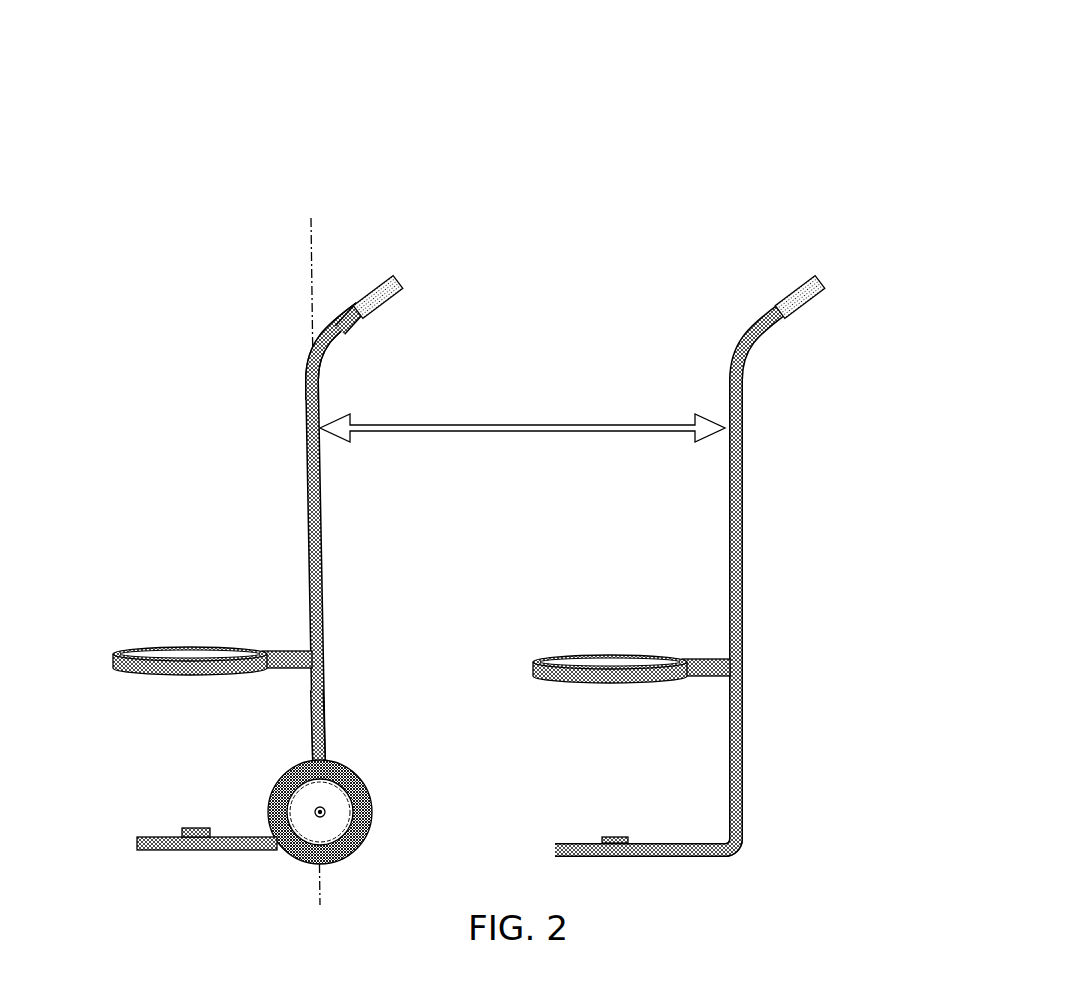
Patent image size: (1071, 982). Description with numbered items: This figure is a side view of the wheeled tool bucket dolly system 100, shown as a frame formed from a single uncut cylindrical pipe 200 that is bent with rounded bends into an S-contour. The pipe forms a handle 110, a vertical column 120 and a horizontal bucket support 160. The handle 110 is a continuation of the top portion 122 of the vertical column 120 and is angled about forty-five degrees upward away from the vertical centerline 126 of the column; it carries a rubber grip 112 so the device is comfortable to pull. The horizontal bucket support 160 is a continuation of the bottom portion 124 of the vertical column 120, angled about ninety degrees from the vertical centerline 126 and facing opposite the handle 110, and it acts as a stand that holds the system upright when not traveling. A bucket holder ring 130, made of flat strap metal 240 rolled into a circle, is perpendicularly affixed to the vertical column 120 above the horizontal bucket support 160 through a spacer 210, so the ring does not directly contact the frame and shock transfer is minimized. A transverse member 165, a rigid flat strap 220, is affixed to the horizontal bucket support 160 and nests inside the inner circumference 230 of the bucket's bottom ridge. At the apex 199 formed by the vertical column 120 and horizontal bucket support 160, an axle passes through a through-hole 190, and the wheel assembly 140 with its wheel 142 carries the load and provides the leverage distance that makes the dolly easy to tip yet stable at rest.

The wheeled tool bucket dolly system 100 is at (614, 113).
The handle 110 is at (358, 325).
The rubber grip 112 is at (400, 298).
The vertical column 120 is at (325, 546).
The top portion 122 is at (303, 386).
The bottom portion 124 is at (330, 753).
The vertical centerline 126 is at (308, 273).
The bucket holder ring 130 is at (116, 648).
The wheel assembly 140 is at (370, 832).
The wheel 142 is at (372, 800).
The horizontal bucket support 160 is at (148, 834).
The transverse member 165 is at (198, 824).
The through-hole 190 is at (747, 826).
The apex 199 is at (728, 833).
The single uncut cylindrical pipe 200 is at (726, 566).
The spacer 210 is at (292, 648).
The rigid flat strap 220 is at (558, 653).
The inner circumference 230 is at (618, 660).
The flat strap metal 240 is at (613, 688).